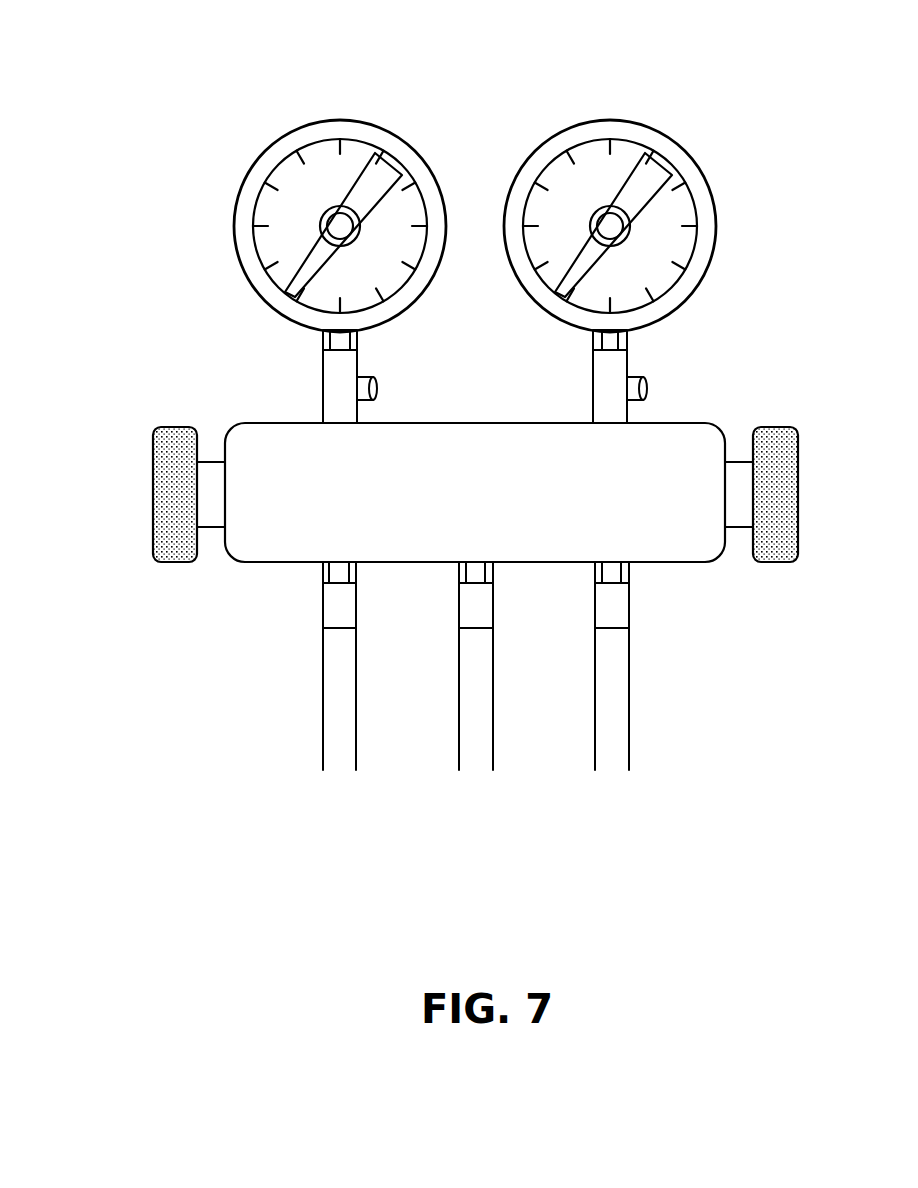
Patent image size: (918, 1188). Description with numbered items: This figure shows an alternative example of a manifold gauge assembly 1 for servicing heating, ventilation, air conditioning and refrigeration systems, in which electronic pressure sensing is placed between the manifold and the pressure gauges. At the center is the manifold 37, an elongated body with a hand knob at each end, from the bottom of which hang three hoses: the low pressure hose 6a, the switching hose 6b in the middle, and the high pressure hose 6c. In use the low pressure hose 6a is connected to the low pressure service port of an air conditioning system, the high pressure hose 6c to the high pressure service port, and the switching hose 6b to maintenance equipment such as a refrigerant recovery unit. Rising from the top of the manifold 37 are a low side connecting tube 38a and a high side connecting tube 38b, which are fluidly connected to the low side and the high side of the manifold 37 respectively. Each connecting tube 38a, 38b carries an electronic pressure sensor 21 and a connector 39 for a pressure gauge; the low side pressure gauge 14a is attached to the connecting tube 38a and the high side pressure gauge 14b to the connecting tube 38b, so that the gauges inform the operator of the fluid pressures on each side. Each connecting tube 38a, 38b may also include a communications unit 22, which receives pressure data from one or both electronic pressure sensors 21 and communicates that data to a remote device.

The manifold gauge assembly 1 is at (116, 221).
The low side pressure gauge 14a is at (344, 130).
The high side pressure gauge 14b is at (605, 128).
The connector 39 is at (325, 335).
The low side connecting tube 38a is at (328, 390).
The high side connecting tube 38b is at (600, 388).
The electronic pressure sensor 21 is at (587, 389).
The communications unit 22 is at (362, 390).
The manifold 37 is at (663, 542).
The low pressure hose 6a is at (343, 757).
The switching hose 6b is at (475, 757).
The high pressure hose 6c is at (610, 757).